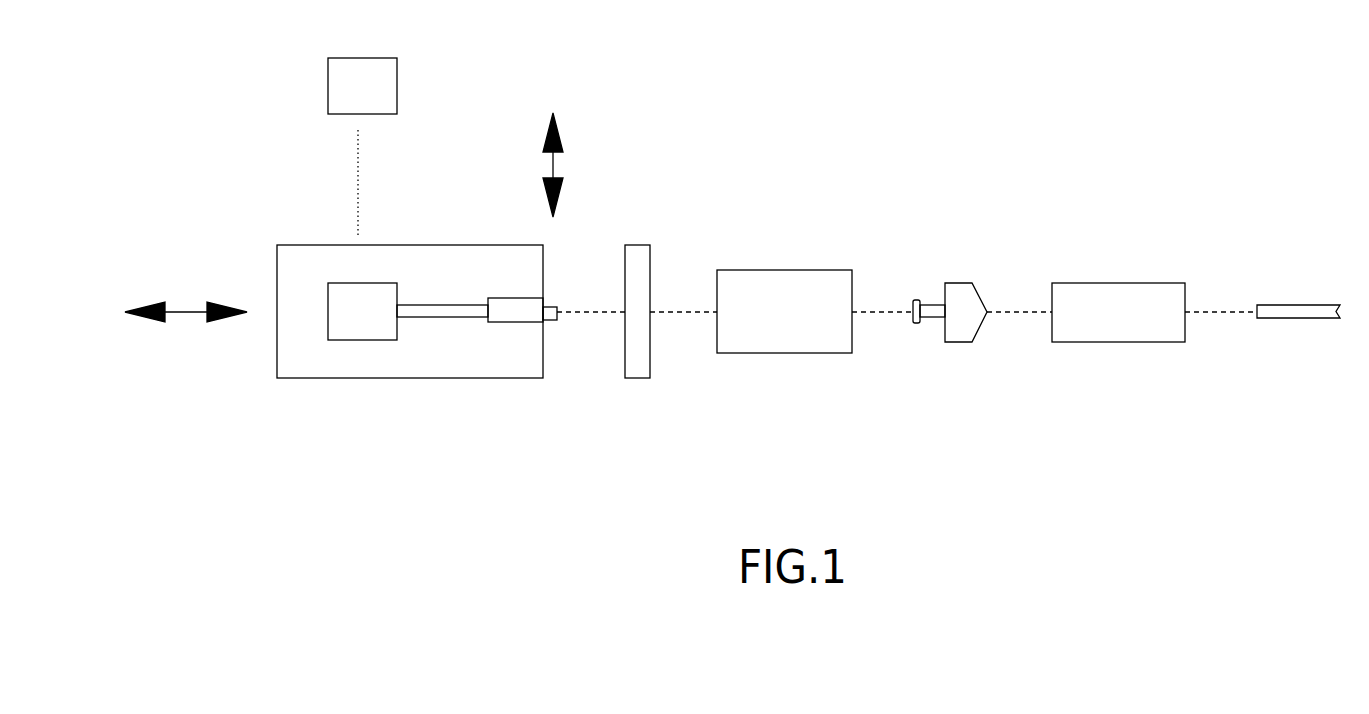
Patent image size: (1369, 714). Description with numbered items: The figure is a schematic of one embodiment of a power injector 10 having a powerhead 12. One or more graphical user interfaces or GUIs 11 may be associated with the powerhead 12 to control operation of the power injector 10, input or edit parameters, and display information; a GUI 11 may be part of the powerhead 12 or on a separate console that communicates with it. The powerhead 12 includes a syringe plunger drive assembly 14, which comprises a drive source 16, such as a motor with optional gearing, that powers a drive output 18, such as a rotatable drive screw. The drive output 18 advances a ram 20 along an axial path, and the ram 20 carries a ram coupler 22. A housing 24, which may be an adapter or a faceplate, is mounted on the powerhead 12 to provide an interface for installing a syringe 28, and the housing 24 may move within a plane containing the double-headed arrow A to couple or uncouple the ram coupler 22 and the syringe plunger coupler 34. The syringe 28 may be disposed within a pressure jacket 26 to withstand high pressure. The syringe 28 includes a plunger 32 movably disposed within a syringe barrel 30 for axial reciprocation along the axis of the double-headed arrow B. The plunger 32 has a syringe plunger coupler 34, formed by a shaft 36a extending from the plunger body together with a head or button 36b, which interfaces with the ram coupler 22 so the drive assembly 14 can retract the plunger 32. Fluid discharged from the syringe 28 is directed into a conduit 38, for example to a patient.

The power injector 10 is at (868, 127).
The graphical user interface 11 is at (377, 100).
The powerhead 12 is at (367, 378).
The syringe plunger drive assembly 14 is at (443, 280).
The drive source 16 is at (377, 326).
The drive output 18 is at (445, 317).
The ram 20 is at (512, 322).
The ram coupler 22 is at (548, 322).
The housing 24 is at (640, 245).
The pressure jacket 26 is at (793, 270).
The syringe 28 is at (1133, 283).
The syringe barrel 30 is at (1118, 318).
The plunger 32 is at (975, 283).
The syringe plunger coupler 34 is at (933, 300).
The shaft 36a is at (933, 317).
The head 36b is at (917, 323).
The conduit 38 is at (1288, 318).
The double-headed arrow A is at (553, 160).
The double-headed arrow B is at (183, 312).